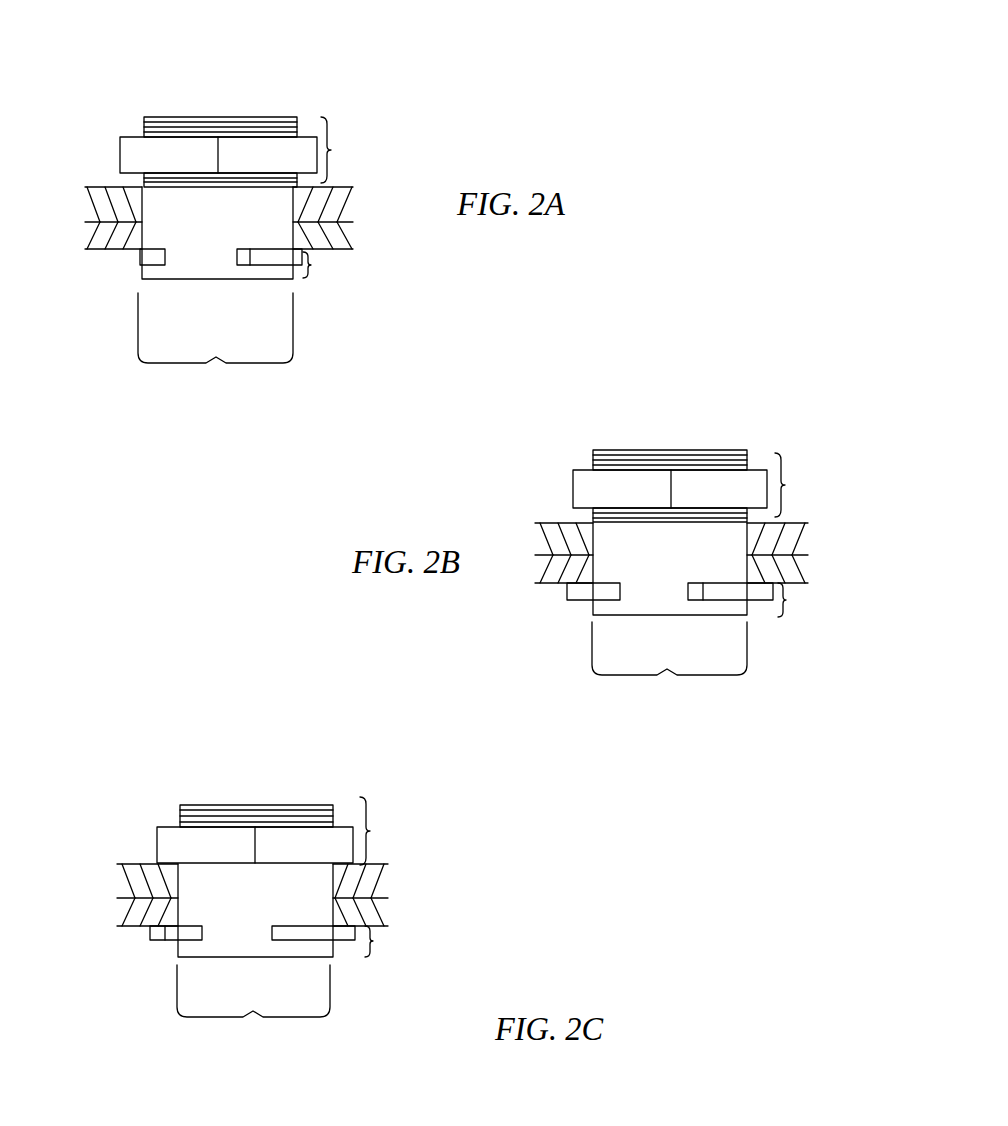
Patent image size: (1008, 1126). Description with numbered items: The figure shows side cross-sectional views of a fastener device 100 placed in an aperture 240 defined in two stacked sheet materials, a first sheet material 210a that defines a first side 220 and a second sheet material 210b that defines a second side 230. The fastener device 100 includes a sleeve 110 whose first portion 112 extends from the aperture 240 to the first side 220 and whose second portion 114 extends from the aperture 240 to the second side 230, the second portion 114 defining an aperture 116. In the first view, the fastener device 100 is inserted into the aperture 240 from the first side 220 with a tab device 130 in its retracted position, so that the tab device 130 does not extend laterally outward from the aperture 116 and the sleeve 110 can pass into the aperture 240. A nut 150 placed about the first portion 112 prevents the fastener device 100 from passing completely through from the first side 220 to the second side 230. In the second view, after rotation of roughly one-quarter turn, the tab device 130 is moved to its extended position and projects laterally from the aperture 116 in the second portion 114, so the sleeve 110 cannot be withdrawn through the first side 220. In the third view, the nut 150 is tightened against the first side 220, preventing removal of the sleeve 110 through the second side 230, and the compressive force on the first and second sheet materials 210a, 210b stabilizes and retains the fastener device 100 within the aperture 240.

In FIG. 2A, the fastener device 100 is at (186, 104).
In FIG. 2B, the fastener device 100 is at (639, 434).
In FIG. 2C, the fastener device 100 is at (258, 796).
In FIG. 2A, the sleeve 110 is at (143, 272).
In FIG. 2A, the first portion 112 is at (349, 150).
In FIG. 2B, the first portion 112 is at (803, 485).
In FIG. 2C, the first portion 112 is at (387, 831).
In FIG. 2A, the second portion 114 is at (331, 268).
In FIG. 2B, the second portion 114 is at (792, 603).
In FIG. 2C, the second portion 114 is at (377, 940).
In FIG. 2A, the aperture 116 is at (250, 262).
In FIG. 2A, the tab device 130 is at (268, 262).
In FIG. 2B, the tab device 130 is at (575, 601).
In FIG. 2C, the tab device 130 is at (337, 942).
In FIG. 2A, the nut 150 is at (246, 150).
In FIG. 2B, the nut 150 is at (695, 487).
In FIG. 2C, the nut 150 is at (282, 842).
In FIG. 2A, the first sheet material 210a is at (335, 210).
In FIG. 2B, the first sheet material 210a is at (787, 542).
In FIG. 2C, the first sheet material 210a is at (377, 883).
In FIG. 2A, the second sheet material 210b is at (343, 233).
In FIG. 2B, the second sheet material 210b is at (795, 570).
In FIG. 2C, the second sheet material 210b is at (378, 912).
In FIG. 2A, the first side 220 is at (92, 187).
In FIG. 2B, the first side 220 is at (558, 522).
In FIG. 2C, the first side 220 is at (142, 862).
In FIG. 2A, the second side 230 is at (90, 250).
In FIG. 2B, the second side 230 is at (553, 585).
In FIG. 2C, the second side 230 is at (123, 925).
In FIG. 2A, the aperture 240 is at (215, 348).
In FIG. 2B, the aperture 240 is at (669, 668).
In FIG. 2C, the aperture 240 is at (253, 1011).